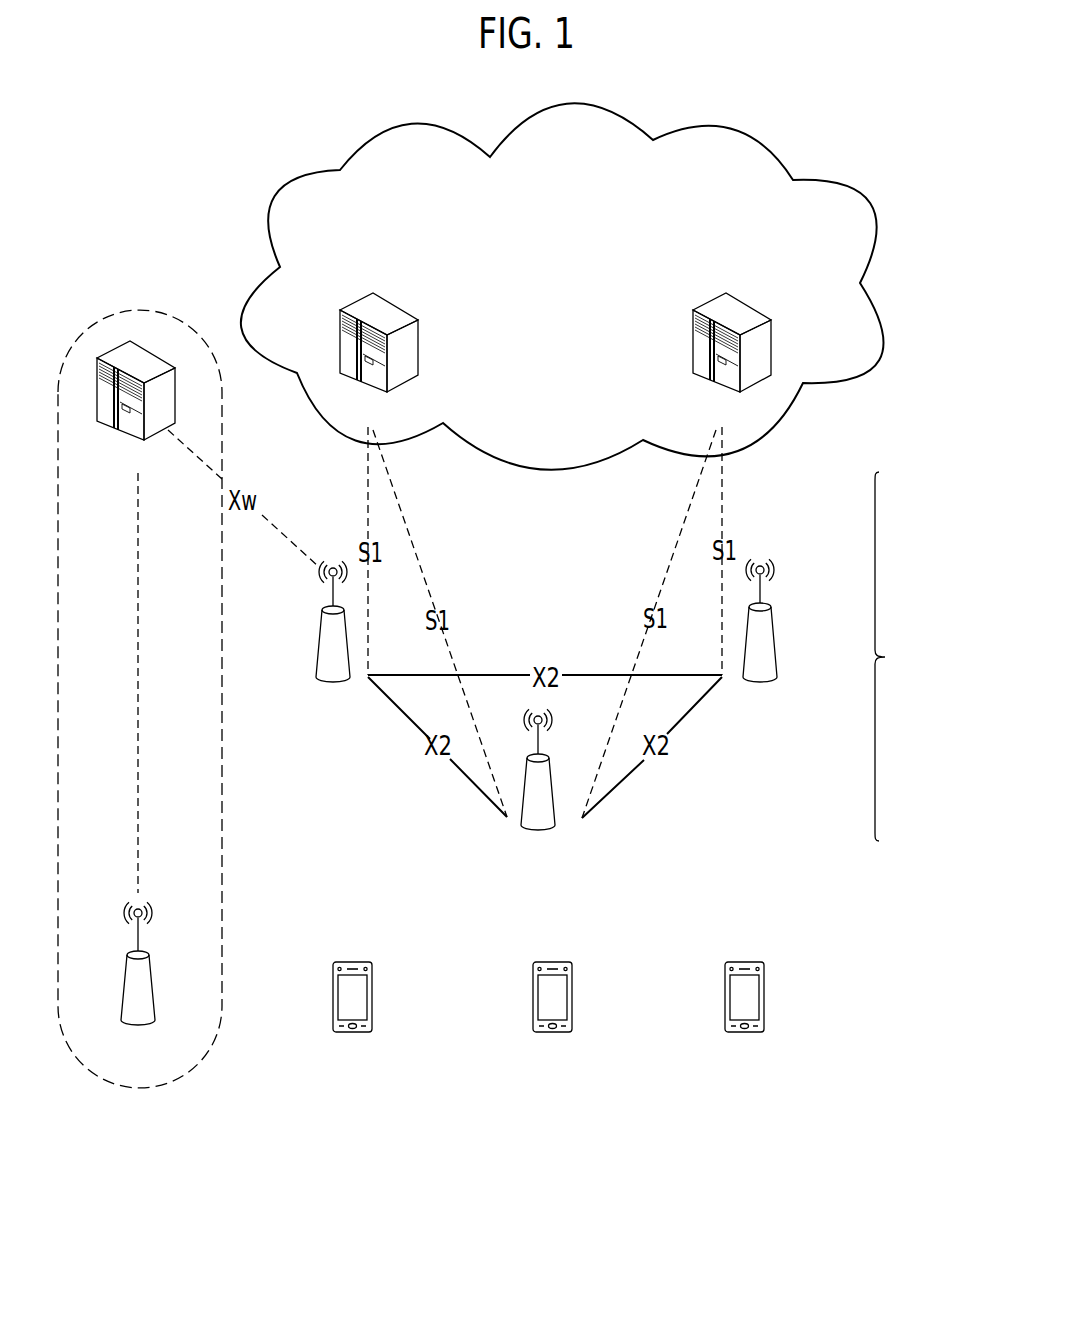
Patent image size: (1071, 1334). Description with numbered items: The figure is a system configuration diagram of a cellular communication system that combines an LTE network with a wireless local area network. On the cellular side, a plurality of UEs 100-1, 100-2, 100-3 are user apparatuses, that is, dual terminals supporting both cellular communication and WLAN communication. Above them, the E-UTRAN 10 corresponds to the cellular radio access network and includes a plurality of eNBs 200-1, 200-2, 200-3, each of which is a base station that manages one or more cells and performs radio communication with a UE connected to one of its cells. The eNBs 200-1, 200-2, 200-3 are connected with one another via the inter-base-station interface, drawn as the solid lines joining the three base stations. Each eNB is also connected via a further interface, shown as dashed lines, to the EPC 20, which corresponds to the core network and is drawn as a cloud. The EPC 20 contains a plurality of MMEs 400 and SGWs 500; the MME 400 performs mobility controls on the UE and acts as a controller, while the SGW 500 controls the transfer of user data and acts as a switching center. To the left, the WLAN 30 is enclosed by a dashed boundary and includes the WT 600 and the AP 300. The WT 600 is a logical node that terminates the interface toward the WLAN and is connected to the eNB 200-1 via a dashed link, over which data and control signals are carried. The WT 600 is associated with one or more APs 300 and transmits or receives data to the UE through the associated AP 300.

The E-UTRAN 10 is at (924, 656).
The EPC 20 is at (774, 148).
The WLAN 30 is at (142, 1090).
The UE 100-1 is at (358, 962).
The UE 100-2 is at (551, 962).
The UE 100-3 is at (745, 962).
The eNB 200-1 is at (319, 646).
The eNB 200-2 is at (557, 800).
The eNB 200-3 is at (777, 622).
The AP 300 is at (153, 993).
The MME 400 is at (400, 309).
The SGW 500 is at (740, 309).
The WT 600 is at (118, 347).